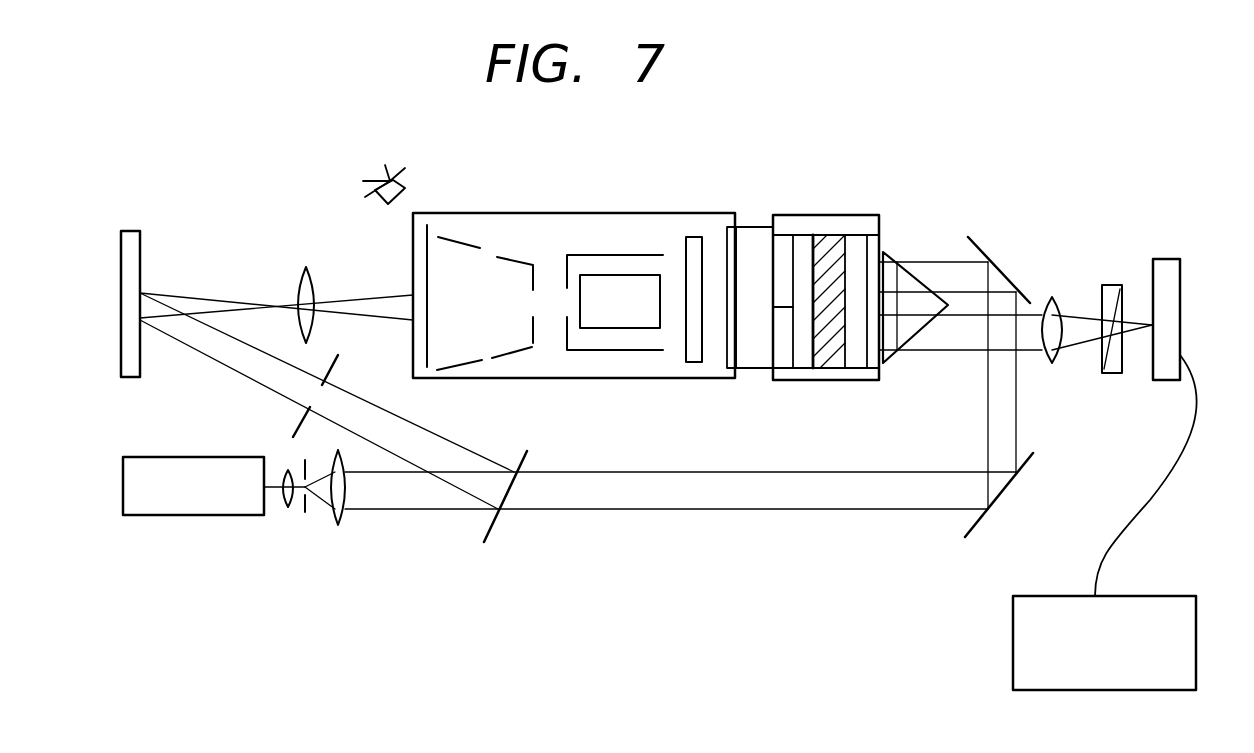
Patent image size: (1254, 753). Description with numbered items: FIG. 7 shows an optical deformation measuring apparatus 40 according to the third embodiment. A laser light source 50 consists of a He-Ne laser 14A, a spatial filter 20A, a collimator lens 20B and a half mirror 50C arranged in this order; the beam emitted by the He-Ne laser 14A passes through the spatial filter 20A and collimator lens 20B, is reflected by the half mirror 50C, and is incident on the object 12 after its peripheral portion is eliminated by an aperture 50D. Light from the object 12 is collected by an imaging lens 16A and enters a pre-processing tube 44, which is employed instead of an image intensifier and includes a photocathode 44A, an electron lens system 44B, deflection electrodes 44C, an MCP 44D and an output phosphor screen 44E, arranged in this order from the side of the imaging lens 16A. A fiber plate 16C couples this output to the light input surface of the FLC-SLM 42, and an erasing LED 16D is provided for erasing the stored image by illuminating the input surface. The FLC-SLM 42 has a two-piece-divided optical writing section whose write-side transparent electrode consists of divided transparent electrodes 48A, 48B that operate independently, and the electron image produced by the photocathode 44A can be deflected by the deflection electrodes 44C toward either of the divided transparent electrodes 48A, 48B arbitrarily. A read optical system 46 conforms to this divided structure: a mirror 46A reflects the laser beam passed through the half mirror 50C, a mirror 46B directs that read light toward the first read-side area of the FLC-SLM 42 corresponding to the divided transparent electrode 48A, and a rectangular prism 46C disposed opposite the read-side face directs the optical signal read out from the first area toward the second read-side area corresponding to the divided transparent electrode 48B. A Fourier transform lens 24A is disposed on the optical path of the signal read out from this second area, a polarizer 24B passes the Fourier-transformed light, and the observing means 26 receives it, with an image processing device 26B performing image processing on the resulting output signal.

The object 12 is at (134, 231).
The imaging lens 16A is at (308, 267).
The fiber plate 16C is at (753, 235).
The erasing LED 16D is at (406, 188).
The He-Ne laser 14A is at (150, 518).
The spatial filter 20A is at (303, 508).
The collimator lens 20B is at (342, 514).
The Fourier transform lens 24A is at (1053, 297).
The polarizer 24B is at (1115, 285).
The observing means 26 is at (1182, 305).
The image processing device 26B is at (1196, 607).
The optical deformation measuring apparatus 40 is at (621, 665).
The FLC-SLM 42 is at (848, 193).
The pre-processing tube 44 is at (605, 200).
The photocathode 44A is at (427, 263).
The electron lens system 44B is at (505, 256).
The deflection electrodes 44C is at (633, 330).
The MCP 44D is at (690, 236).
The output phosphor screen 44E is at (730, 365).
The read optical system 46 is at (766, 528).
The mirror 46A is at (1003, 493).
The mirror 46B is at (980, 248).
The rectangular prism 46C is at (890, 252).
The divided transparent electrode 48A is at (783, 243).
The divided transparent electrode 48B is at (778, 358).
The laser light source 50 is at (208, 532).
The half mirror 50C is at (500, 527).
The aperture 50D is at (293, 433).